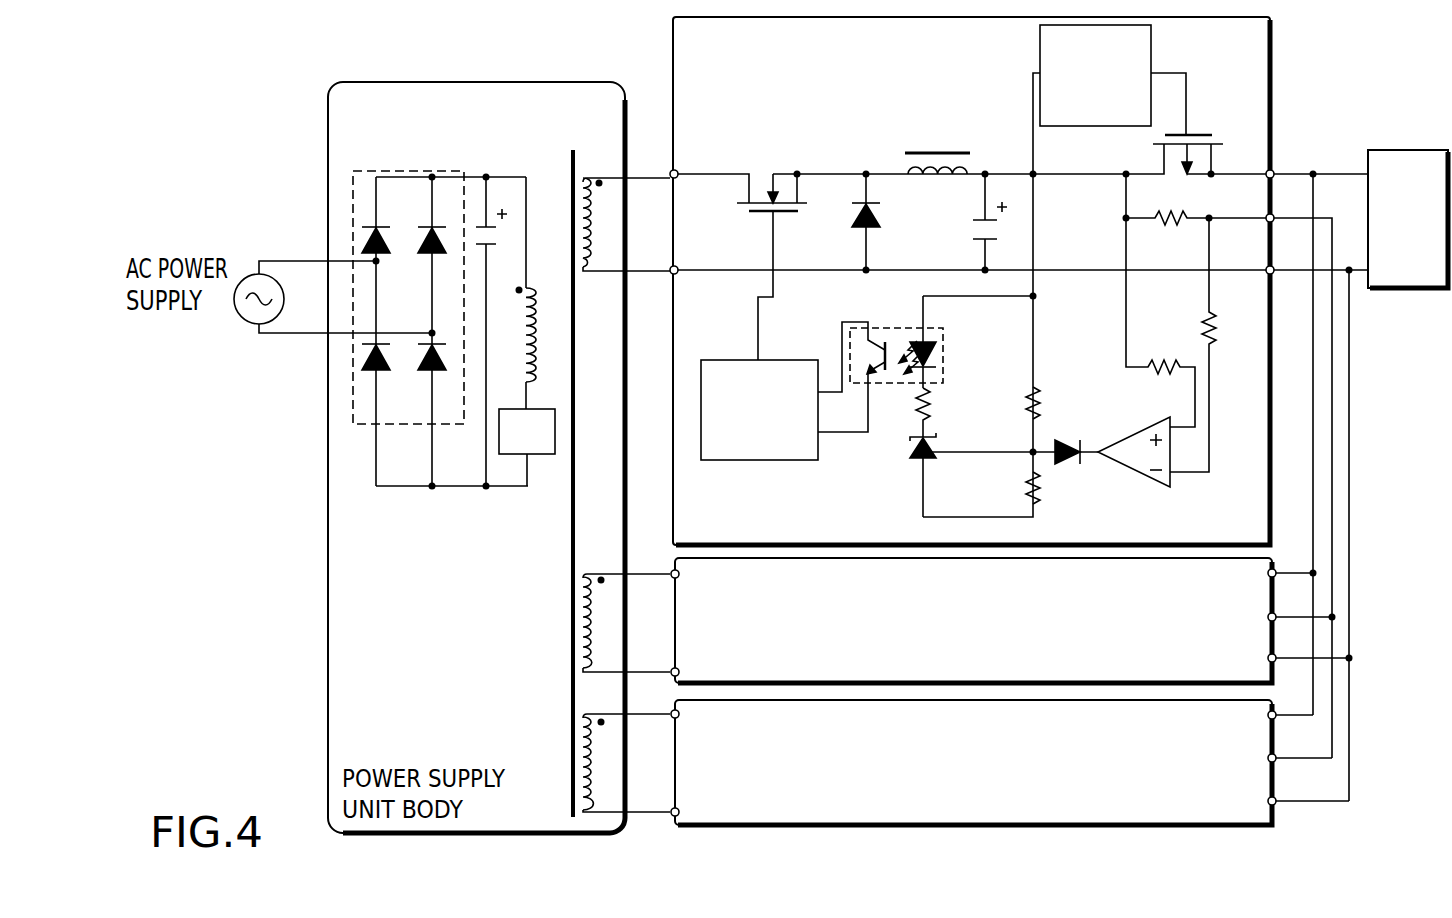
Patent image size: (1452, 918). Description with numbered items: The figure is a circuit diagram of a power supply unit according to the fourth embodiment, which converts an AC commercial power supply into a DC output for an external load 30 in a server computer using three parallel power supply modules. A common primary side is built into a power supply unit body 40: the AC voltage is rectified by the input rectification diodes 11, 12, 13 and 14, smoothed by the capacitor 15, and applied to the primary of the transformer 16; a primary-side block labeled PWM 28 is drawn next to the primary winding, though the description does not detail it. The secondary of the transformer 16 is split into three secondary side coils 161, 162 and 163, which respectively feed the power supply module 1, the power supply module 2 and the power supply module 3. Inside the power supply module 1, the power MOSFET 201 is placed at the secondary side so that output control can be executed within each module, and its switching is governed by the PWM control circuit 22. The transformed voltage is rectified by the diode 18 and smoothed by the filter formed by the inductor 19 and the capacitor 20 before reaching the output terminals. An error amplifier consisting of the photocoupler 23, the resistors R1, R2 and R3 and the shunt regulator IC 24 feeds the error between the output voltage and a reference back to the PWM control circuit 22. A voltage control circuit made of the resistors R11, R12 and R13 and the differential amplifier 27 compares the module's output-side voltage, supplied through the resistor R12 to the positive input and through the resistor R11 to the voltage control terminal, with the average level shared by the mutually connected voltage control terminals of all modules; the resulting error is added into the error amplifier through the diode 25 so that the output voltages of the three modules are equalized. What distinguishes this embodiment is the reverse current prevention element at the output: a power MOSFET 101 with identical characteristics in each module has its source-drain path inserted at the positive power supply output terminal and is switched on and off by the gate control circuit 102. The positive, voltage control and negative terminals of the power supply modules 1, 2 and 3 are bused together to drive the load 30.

The power supply module 1 is at (1273, 72).
The power supply module 2 is at (1275, 557).
The power supply module 3 is at (1272, 826).
The diode 11 is at (383, 268).
The diode 12 is at (439, 258).
The diode 13 is at (383, 374).
The diode 14 is at (439, 374).
The capacitor 15 is at (497, 249).
The transformer 16 is at (572, 150).
The secondary side coil 161 is at (584, 176).
The secondary side coil 162 is at (584, 574).
The secondary side coil 163 is at (584, 714).
The diode 18 is at (882, 212).
The inductor 19 is at (940, 151).
The capacitor 20 is at (970, 226).
The power MOSFET 201 is at (783, 219).
The PWM control circuit 22 is at (788, 360).
The photocoupler 23 is at (945, 350).
The shunt regulator IC 24 is at (931, 462).
The diode 25 is at (1090, 462).
The differential amplifier 27 is at (1137, 431).
The PWM circuit 28 is at (513, 409).
The external load 30 is at (1395, 290).
The power supply unit body 40 is at (328, 588).
The power MOSFET 101 is at (1211, 133).
The gate control circuit 102 is at (1152, 45).
The resistor R1 is at (941, 412).
The resistor R2 is at (1051, 403).
The resistor R3 is at (1051, 489).
The resistor R11 is at (1195, 214).
The resistor R12 is at (1160, 322).
The resistor R13 is at (1218, 345).